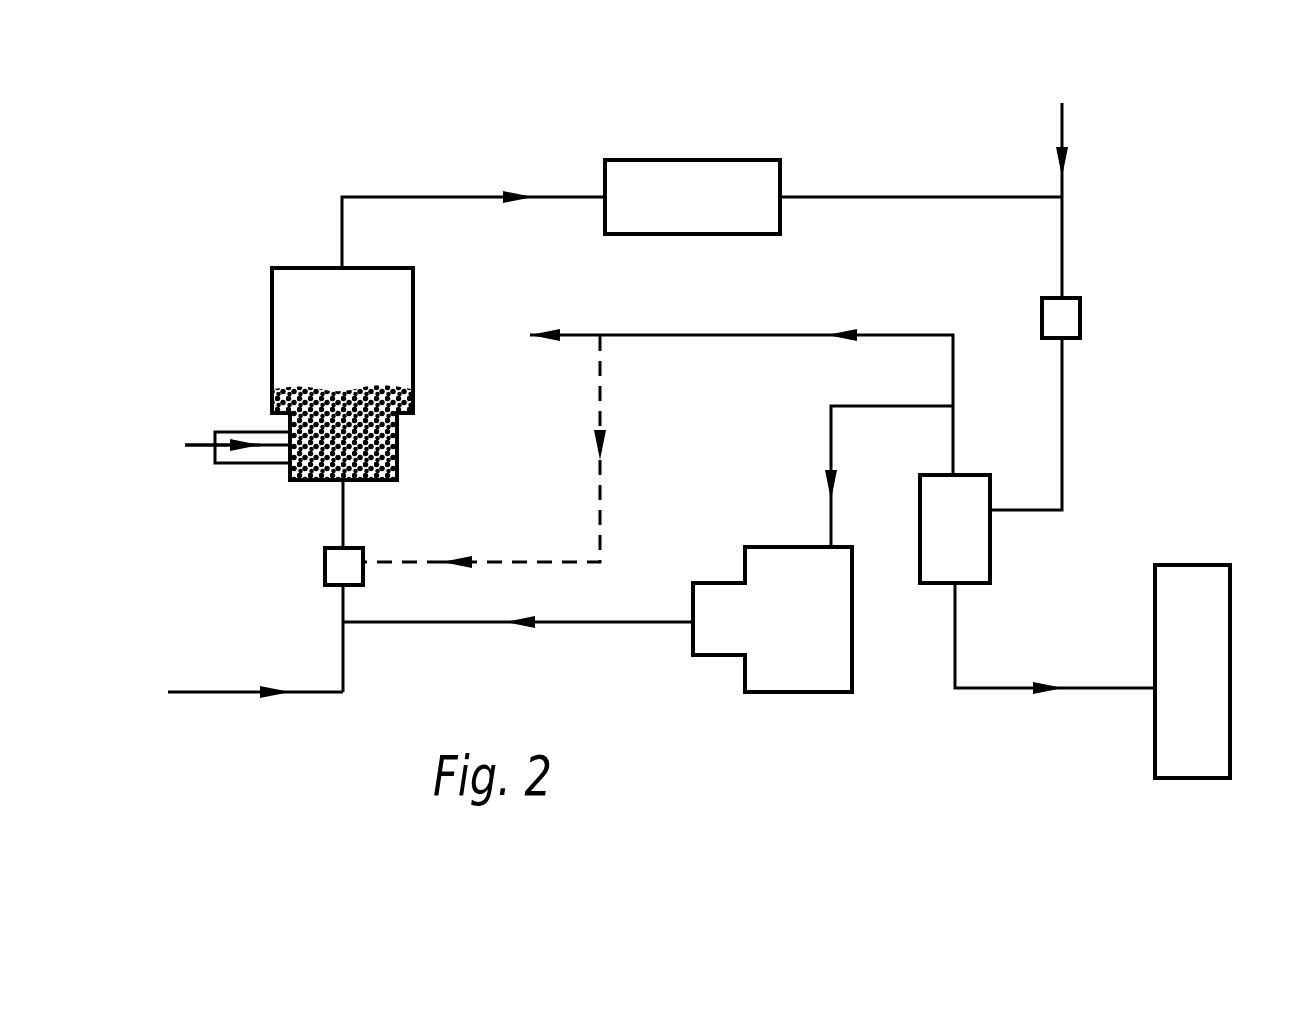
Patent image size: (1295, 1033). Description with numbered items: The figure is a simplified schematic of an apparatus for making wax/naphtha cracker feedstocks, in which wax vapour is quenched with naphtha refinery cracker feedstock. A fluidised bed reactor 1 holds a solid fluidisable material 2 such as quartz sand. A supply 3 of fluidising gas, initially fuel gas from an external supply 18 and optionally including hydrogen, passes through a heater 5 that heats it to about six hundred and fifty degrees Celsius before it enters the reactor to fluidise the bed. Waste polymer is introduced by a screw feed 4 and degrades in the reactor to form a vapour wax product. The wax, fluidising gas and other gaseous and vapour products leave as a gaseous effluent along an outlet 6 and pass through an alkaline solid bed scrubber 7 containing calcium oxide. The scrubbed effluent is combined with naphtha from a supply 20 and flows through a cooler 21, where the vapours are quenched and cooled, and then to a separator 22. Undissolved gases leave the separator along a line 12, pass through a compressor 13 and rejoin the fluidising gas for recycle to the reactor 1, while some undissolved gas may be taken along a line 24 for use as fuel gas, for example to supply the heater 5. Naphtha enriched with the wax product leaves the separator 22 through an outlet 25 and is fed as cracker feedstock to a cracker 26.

The fluidised bed reactor 1 is at (405, 378).
The solid fluidisable material 2 is at (363, 452).
The supply of fluidising gas 3 is at (343, 523).
The screw feed 4 is at (255, 455).
The heater 5 is at (332, 568).
The outlet 6 is at (432, 197).
The alkaline solid bed scrubber 7 is at (688, 165).
The recycle gas line 12 is at (826, 523).
The compressor 13 is at (796, 673).
The supply of fuel gas 18 is at (200, 697).
The supply of naphtha 20 is at (1062, 120).
The cooler 21 is at (1062, 322).
The separator 22 is at (970, 548).
The fuel gas outlet line 24 is at (898, 335).
The outlet for naphtha enriched with wax 25 is at (1082, 693).
The cracker 26 is at (1215, 645).